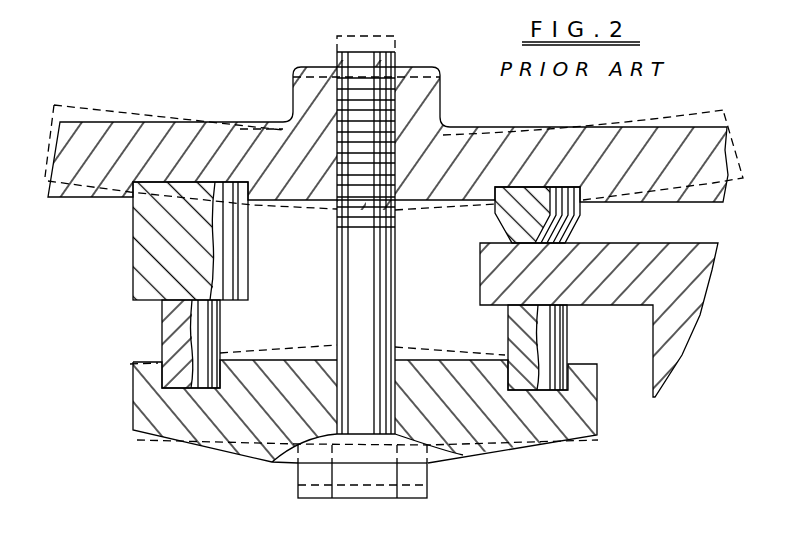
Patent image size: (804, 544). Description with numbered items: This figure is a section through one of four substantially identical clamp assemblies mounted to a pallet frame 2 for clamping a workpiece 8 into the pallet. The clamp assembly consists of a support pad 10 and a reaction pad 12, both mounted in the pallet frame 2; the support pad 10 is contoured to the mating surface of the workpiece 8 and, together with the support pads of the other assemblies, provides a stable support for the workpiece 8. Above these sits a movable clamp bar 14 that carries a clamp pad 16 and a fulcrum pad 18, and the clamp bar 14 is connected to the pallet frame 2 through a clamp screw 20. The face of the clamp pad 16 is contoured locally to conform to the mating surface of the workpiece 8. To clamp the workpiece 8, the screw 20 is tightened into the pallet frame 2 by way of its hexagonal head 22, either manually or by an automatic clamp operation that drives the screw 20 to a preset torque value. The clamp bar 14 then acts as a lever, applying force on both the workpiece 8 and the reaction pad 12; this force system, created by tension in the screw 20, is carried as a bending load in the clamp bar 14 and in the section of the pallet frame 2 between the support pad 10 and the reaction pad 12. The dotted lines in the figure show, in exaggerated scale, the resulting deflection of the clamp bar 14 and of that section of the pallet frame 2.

The pallet frame 2 is at (700, 203).
The workpiece 8 is at (688, 337).
The support pad 10 is at (582, 223).
The reaction pad 12 is at (133, 253).
The clamp bar 14 is at (490, 455).
The clamp pad 16 is at (570, 338).
The fulcrum pad 18 is at (221, 328).
The clamp screw 20 is at (378, 295).
The hexagonal head 22 is at (415, 502).